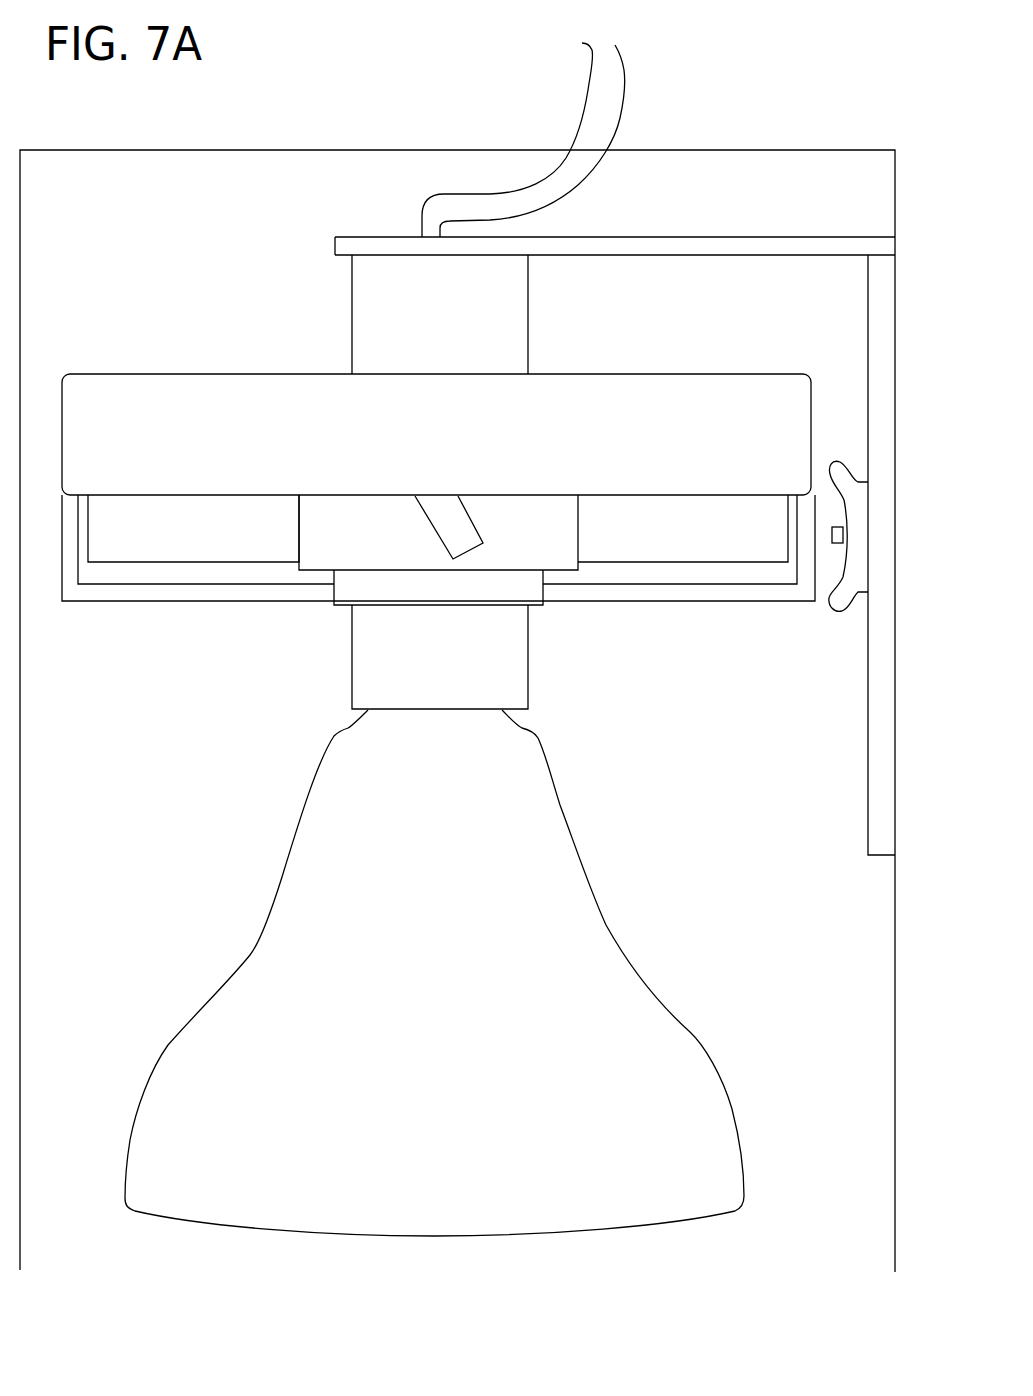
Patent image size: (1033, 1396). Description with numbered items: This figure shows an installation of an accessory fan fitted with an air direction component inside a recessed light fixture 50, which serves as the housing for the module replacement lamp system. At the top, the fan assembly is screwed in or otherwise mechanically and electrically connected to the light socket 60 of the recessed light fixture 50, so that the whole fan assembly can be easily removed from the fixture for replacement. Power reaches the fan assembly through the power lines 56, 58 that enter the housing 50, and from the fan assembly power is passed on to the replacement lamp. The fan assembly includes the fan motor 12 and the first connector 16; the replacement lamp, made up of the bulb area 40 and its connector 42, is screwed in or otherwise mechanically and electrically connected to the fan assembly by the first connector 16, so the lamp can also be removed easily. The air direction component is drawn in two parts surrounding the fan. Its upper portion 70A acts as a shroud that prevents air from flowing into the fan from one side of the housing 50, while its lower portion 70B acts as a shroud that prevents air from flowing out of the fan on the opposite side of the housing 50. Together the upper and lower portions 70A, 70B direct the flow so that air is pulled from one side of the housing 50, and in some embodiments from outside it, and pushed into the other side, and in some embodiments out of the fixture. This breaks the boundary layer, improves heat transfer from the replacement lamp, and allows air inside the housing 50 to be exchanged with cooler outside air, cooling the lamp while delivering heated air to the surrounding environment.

The fan motor 12 is at (325, 558).
The first connector 16 is at (545, 606).
The bulb area 40 is at (602, 918).
The connector 42 is at (528, 640).
The recessed light fixture 50 is at (738, 155).
The power line 56 is at (625, 90).
The power line 58 is at (578, 128).
The light socket 60 is at (350, 350).
The upper portion of the air direction component 70A is at (652, 384).
The lower portion of the air direction component 70B is at (695, 601).